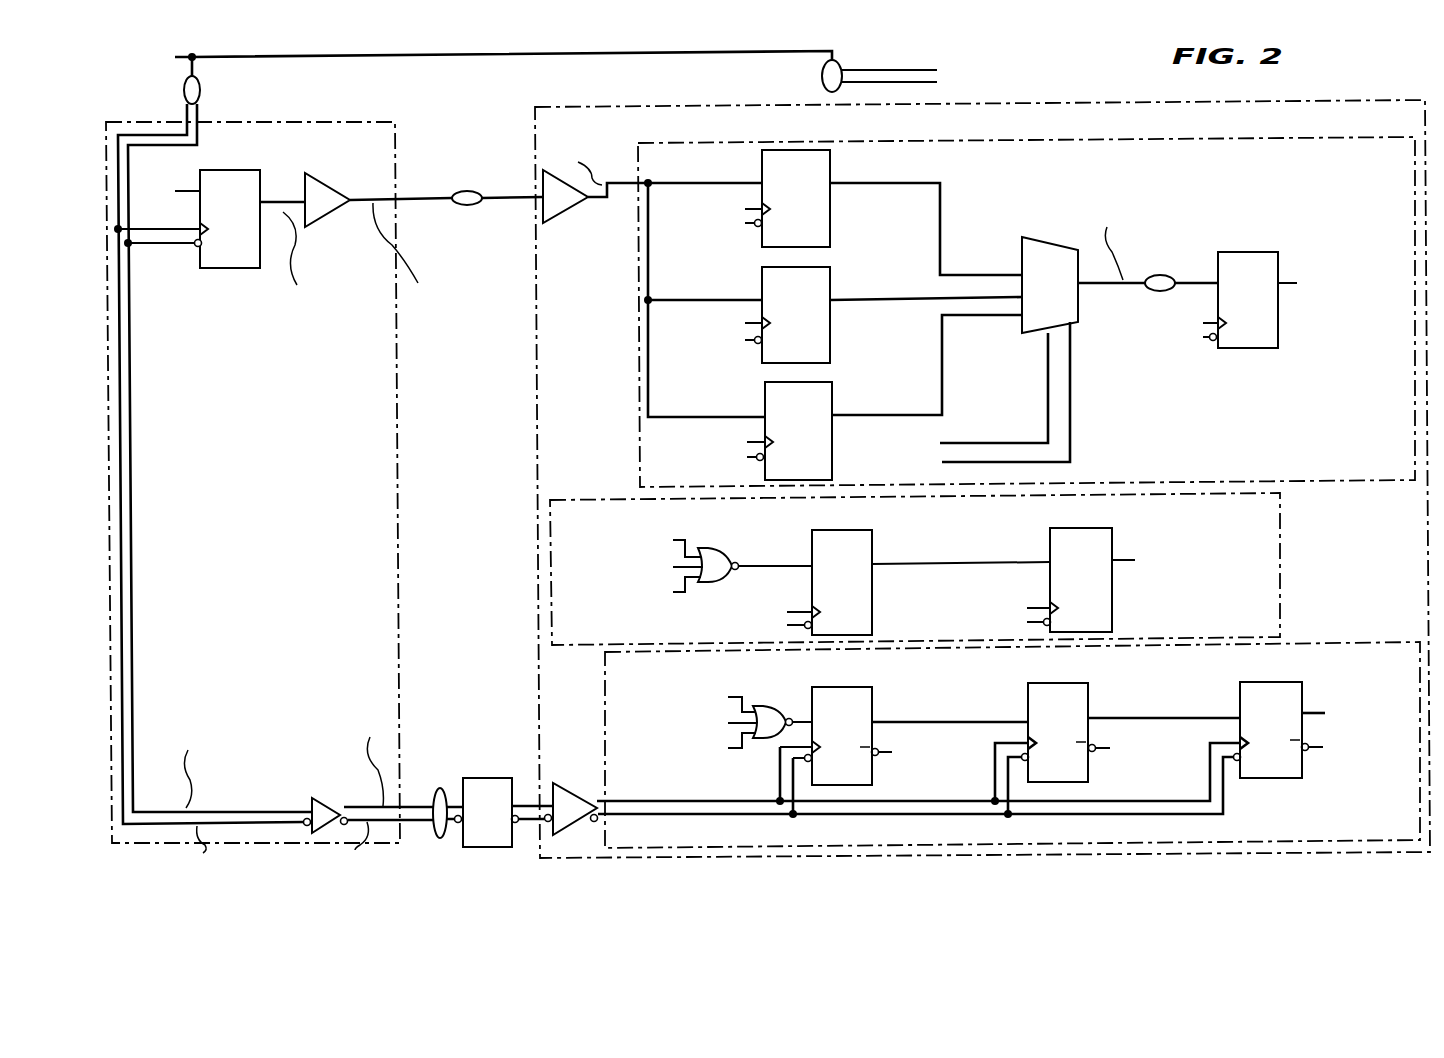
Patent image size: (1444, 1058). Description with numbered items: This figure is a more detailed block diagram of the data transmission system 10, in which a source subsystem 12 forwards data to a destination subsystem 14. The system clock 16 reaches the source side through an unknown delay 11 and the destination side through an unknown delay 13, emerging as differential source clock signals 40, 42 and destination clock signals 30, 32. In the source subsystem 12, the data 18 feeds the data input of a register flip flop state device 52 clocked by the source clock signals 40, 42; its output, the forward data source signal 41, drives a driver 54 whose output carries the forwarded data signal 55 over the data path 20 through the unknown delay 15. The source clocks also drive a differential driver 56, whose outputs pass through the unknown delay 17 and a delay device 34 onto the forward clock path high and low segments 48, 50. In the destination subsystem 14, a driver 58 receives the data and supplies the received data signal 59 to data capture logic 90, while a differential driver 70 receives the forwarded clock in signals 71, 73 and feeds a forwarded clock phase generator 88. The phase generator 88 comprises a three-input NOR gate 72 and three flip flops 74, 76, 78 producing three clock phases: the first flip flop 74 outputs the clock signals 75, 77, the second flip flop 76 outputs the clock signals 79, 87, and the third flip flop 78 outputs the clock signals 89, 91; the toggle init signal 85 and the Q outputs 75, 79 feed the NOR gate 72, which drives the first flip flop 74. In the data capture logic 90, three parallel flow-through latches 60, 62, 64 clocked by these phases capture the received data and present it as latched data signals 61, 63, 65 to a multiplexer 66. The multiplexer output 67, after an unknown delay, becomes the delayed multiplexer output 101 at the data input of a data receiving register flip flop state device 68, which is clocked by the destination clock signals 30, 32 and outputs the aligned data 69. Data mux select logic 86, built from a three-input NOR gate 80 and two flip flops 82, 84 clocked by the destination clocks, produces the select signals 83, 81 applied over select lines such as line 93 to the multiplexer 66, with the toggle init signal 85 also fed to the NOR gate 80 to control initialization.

The data transmission system 10 is at (510, 108).
The unknown delay D1 11 is at (203, 88).
The source subsystem 12 is at (360, 120).
The unknown delay D2 13 is at (822, 73).
The destination subsystem 14 is at (725, 105).
The unknown delay D3 15 is at (463, 190).
The system clock 16 is at (467, 70).
The unknown delay D4 17 is at (442, 788).
The data 18 is at (160, 180).
The data path 20 is at (498, 203).
The DST SYS CLK H 30 is at (760, 602).
The DST SYS CLK L 32 is at (647, 625).
The delay element 34 is at (487, 777).
The SRC SYS CLK H 40 is at (148, 246).
The FWD DATA (SOURCE) 41 is at (279, 200).
The SRC SYS CLK L 42 is at (190, 246).
The FWD CLK PATH H 48 is at (523, 806).
The FWD CLK PATH L 50 is at (527, 822).
The register flip flop state device 52 is at (230, 268).
The driver 54 is at (323, 220).
The FWD DATA H 55 is at (381, 198).
The differential driver 56 is at (328, 800).
The driver 58 is at (557, 222).
The TO FWD DATA H 59 is at (620, 118).
The flow-through latch 60 is at (830, 215).
The FWD DATA2 H 61 is at (942, 207).
The flow-through latch 62 is at (830, 327).
The FWD DATA1 H 63 is at (968, 275).
The flow-through latch 64 is at (838, 383).
The FWD DATA0 H 65 is at (978, 317).
The multiplexer 66 is at (1037, 237).
The MUX DOUT 67 is at (1128, 200).
The data receiving register flip flop state device 68 is at (1248, 348).
The T2 FWD DATA H 69 is at (1333, 265).
The differential driver 70 is at (575, 790).
The FWD CLK IN H 71 is at (922, 771).
The three-input NOR gate 72 is at (760, 708).
The FWD CLK IN L 73 is at (919, 799).
The register flip flop state device 74 is at (845, 687).
The FWD CLK0 H 75 is at (680, 418).
The register flip flop state device 76 is at (1068, 683).
The FWD C signal 77 is at (658, 458).
The register flip flop state device 78 is at (1303, 773).
The FWD CLK2 H 79 is at (705, 200).
The three-input NOR gate 80 is at (703, 550).
The SEL0 H 81 is at (1172, 570).
The register flip flop state device 82 is at (812, 542).
The SEL1 H 83 is at (618, 567).
The register flip flop state device 84 is at (1050, 530).
The TOGGLE INIT H 85 is at (1162, 274).
The data mux select logic 86 is at (1280, 553).
The FWD CLK2 L 87 is at (703, 240).
The forwarded clock phase generator 88 is at (1325, 642).
The FWD CLK1 H 89 is at (672, 310).
The data capture logic 90 is at (1043, 137).
The FWD CLK1 L 91 is at (710, 357).
The mux select 1 line 93 is at (1030, 443).
The MUX DOUT (DELAYED) 101 is at (1205, 280).